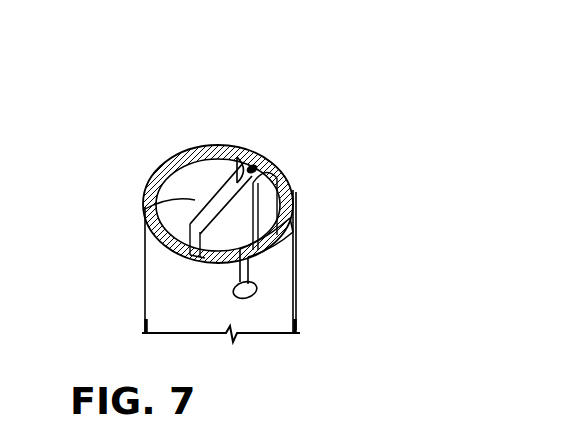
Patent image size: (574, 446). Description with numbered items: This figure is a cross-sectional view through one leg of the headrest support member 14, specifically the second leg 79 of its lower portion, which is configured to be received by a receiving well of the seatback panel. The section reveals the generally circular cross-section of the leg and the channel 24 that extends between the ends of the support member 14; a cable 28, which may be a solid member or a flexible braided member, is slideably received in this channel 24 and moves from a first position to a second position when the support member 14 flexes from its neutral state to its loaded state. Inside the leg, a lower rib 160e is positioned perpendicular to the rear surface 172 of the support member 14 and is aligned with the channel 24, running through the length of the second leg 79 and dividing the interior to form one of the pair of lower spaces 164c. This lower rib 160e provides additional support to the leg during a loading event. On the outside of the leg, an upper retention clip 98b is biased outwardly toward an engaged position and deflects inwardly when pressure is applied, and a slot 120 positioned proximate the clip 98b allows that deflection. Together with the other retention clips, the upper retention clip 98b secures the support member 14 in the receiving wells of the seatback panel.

The support member 14 is at (180, 111).
The rear surface 172 is at (228, 148).
The channel 24 is at (255, 150).
The cable 28 is at (258, 167).
The lower spaces 164c is at (193, 197).
The lower rib 160e is at (143, 210).
The upper retention clips 98b is at (278, 248).
The slots 120 is at (255, 290).
The second leg 79 is at (252, 318).